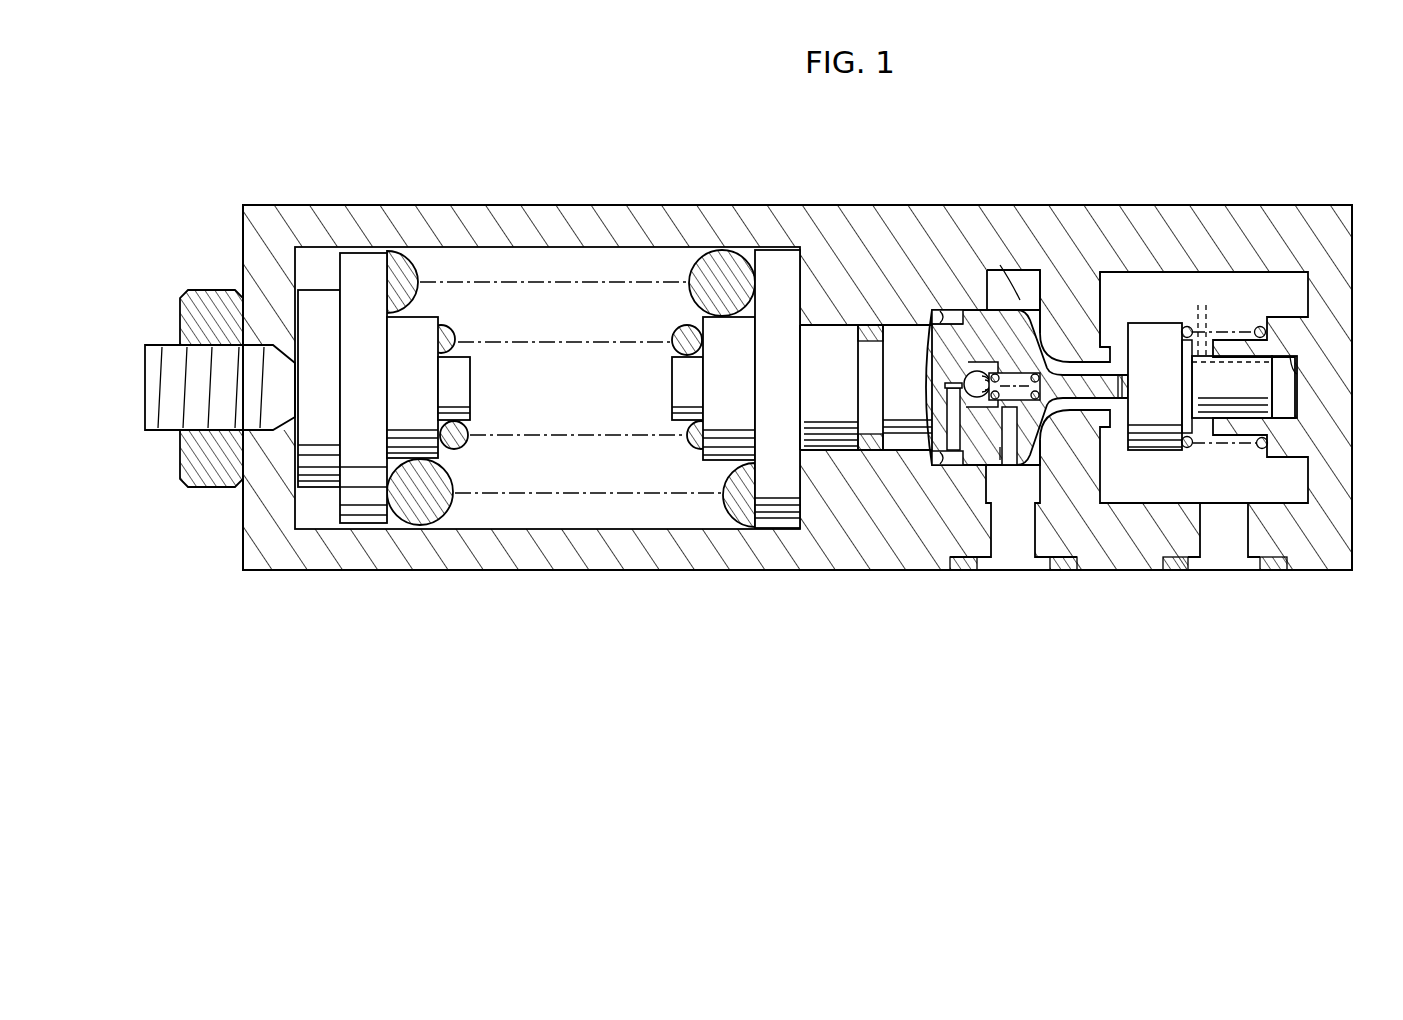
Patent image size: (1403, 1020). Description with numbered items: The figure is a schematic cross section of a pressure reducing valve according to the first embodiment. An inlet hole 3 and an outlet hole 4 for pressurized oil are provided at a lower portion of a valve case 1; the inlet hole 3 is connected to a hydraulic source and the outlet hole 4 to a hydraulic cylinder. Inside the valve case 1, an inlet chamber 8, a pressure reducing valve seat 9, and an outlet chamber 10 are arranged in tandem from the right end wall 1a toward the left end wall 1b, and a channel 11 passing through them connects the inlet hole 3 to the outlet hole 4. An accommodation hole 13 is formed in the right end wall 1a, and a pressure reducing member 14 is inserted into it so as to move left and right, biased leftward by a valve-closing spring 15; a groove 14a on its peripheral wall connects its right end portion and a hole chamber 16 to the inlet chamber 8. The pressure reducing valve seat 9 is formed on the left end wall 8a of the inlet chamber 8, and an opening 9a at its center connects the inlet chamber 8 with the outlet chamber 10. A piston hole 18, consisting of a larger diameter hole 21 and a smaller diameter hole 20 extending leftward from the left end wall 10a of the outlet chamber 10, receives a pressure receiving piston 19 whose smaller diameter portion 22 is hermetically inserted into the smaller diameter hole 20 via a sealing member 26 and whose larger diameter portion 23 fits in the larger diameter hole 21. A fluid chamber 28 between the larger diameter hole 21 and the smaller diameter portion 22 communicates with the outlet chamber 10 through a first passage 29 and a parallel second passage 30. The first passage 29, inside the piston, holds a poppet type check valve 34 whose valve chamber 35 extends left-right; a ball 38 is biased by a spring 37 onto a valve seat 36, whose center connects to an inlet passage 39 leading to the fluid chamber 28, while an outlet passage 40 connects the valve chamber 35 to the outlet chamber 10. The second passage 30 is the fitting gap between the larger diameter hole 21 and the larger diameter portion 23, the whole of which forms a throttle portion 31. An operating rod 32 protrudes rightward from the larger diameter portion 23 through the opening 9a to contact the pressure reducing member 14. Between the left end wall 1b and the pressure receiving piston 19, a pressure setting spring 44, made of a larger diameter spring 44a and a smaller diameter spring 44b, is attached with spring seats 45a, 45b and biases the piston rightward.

The valve case 1 is at (794, 361).
The right end wall 1a is at (1323, 431).
The left end wall 1b is at (262, 247).
The inlet hole 3 is at (1227, 567).
The outlet hole 4 is at (1063, 568).
The inlet chamber 8 is at (1200, 444).
The left end wall of the inlet chamber 8a is at (1092, 338).
The pressure reducing valve seat 9 is at (1119, 487).
The opening 9a is at (1128, 376).
The outlet chamber 10 is at (1062, 392).
The left end wall of the outlet chamber 10a is at (1000, 265).
The channel 11 is at (1154, 412).
The accommodation hole 13 is at (1297, 372).
The pressure reducing member 14 is at (1189, 360).
The groove 14a is at (1195, 340).
The valve-closing spring 15 is at (1262, 326).
The hole chamber 16 is at (1285, 405).
The piston hole 18 is at (888, 293).
The pressure receiving piston 19 is at (969, 300).
The smaller diameter hole 20 is at (880, 323).
The larger diameter hole 21 is at (929, 335).
The smaller diameter portion 22 is at (955, 325).
The larger diameter portion 23 is at (982, 300).
The sealing member 26 is at (848, 293).
The fluid chamber 28 is at (970, 393).
The first passage 29 is at (1000, 528).
The second passage 30 is at (965, 470).
The throttle portion 31 is at (946, 455).
The operating rod 32 is at (1124, 394).
The check valve 34 is at (1000, 362).
The valve chamber 35 is at (1000, 447).
The valve seat 36 is at (960, 388).
The spring 37 is at (1000, 370).
The ball 38 is at (965, 383).
The inlet passage 39 is at (987, 468).
The outlet passage 40 is at (1020, 447).
The pressure setting spring 44 is at (399, 465).
The larger diameter spring 44a is at (400, 520).
The smaller diameter spring 44b is at (465, 447).
The spring seat 45a is at (380, 446).
The spring seat 45b is at (766, 510).